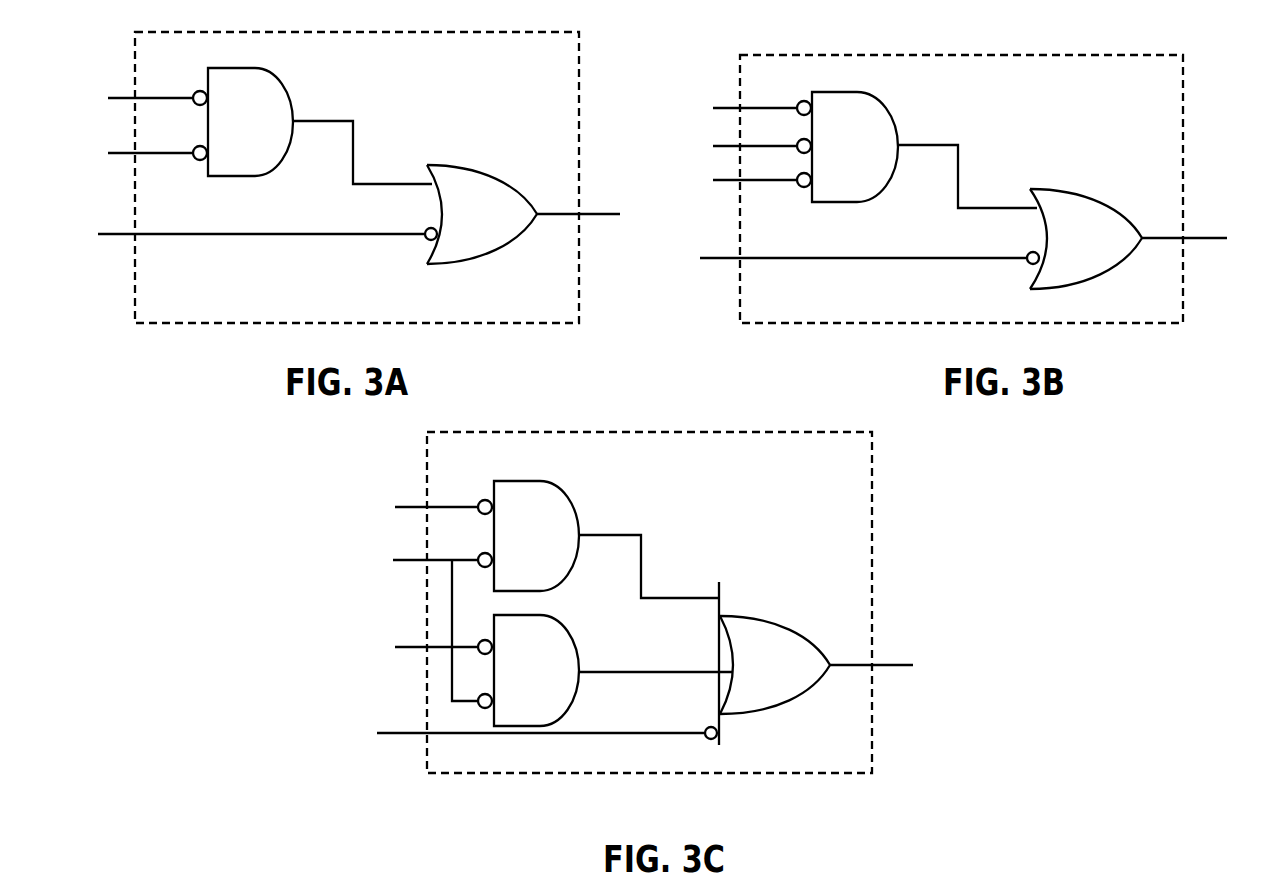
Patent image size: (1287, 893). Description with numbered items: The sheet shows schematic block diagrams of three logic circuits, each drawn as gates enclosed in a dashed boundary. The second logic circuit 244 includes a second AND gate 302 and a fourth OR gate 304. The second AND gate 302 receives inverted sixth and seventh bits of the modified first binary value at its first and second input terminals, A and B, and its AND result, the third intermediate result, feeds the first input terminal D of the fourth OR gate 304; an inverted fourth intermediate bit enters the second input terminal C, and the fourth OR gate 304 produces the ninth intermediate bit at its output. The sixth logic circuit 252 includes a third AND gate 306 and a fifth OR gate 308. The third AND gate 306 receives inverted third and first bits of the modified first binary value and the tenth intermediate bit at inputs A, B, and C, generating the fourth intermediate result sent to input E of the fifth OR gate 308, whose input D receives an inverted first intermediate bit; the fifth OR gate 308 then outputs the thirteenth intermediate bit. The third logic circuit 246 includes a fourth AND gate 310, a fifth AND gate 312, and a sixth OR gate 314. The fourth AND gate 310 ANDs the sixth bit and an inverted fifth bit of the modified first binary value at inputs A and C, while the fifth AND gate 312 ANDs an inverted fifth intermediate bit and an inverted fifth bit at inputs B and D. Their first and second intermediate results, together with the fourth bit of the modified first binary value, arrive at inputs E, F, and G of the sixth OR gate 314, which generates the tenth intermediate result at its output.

In FIG. 3A, the second logic circuit 244 is at (579, 178).
In FIG. 3A, the second AND gate 302 is at (293, 97).
In FIG. 3A, the fourth OR gate 304 is at (472, 173).
In FIG. 3B, the sixth logic circuit 252 is at (1183, 191).
In FIG. 3B, the third AND gate 306 is at (893, 118).
In FIG. 3B, the fifth OR gate 308 is at (1089, 196).
In FIG. 3C, the third logic circuit 246 is at (872, 605).
In FIG. 3C, the fourth AND gate 310 is at (575, 508).
In FIG. 3C, the fifth AND gate 312 is at (575, 652).
In FIG. 3C, the sixth OR gate 314 is at (792, 627).